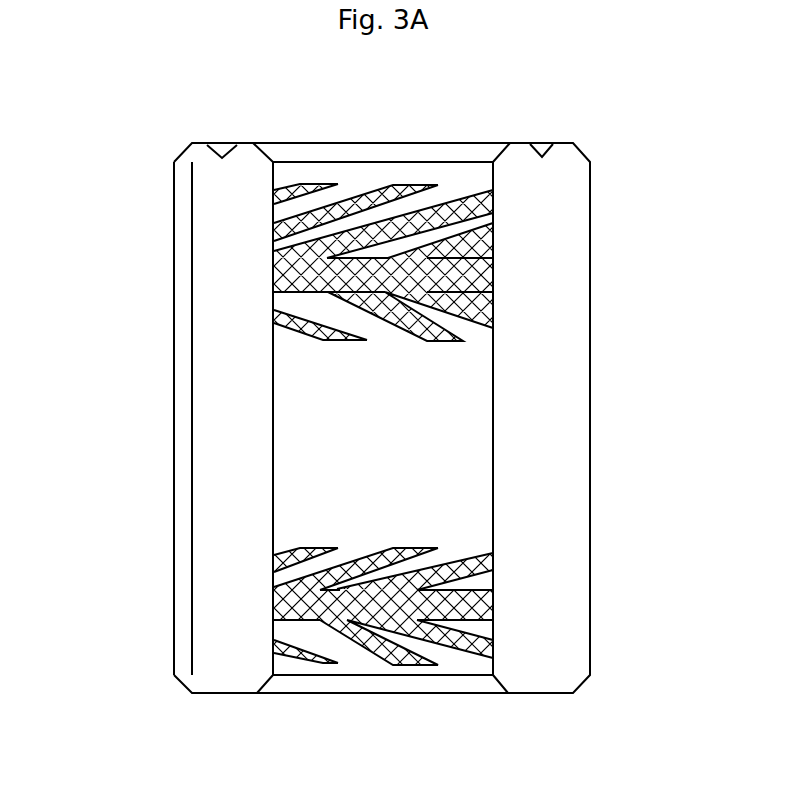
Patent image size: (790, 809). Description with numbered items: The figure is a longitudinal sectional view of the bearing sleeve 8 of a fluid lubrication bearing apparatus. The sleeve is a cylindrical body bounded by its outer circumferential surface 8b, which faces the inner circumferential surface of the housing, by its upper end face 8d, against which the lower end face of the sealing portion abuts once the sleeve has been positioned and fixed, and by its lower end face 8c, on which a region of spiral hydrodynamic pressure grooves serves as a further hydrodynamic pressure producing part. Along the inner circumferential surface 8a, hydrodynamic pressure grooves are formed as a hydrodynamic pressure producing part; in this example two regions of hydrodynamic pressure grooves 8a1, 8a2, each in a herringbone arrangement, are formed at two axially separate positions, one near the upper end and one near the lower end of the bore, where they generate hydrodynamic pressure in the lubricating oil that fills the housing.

The bearing sleeve 8 is at (148, 146).
The upper end face 8d is at (205, 143).
The outer circumferential surface 8b is at (174, 340).
The lower end face 8c is at (542, 695).
The inner circumferential surface 8a is at (493, 426).
The hydrodynamic pressure grooves 8a1 is at (338, 190).
The hydrodynamic pressure grooves 8a2 is at (342, 560).